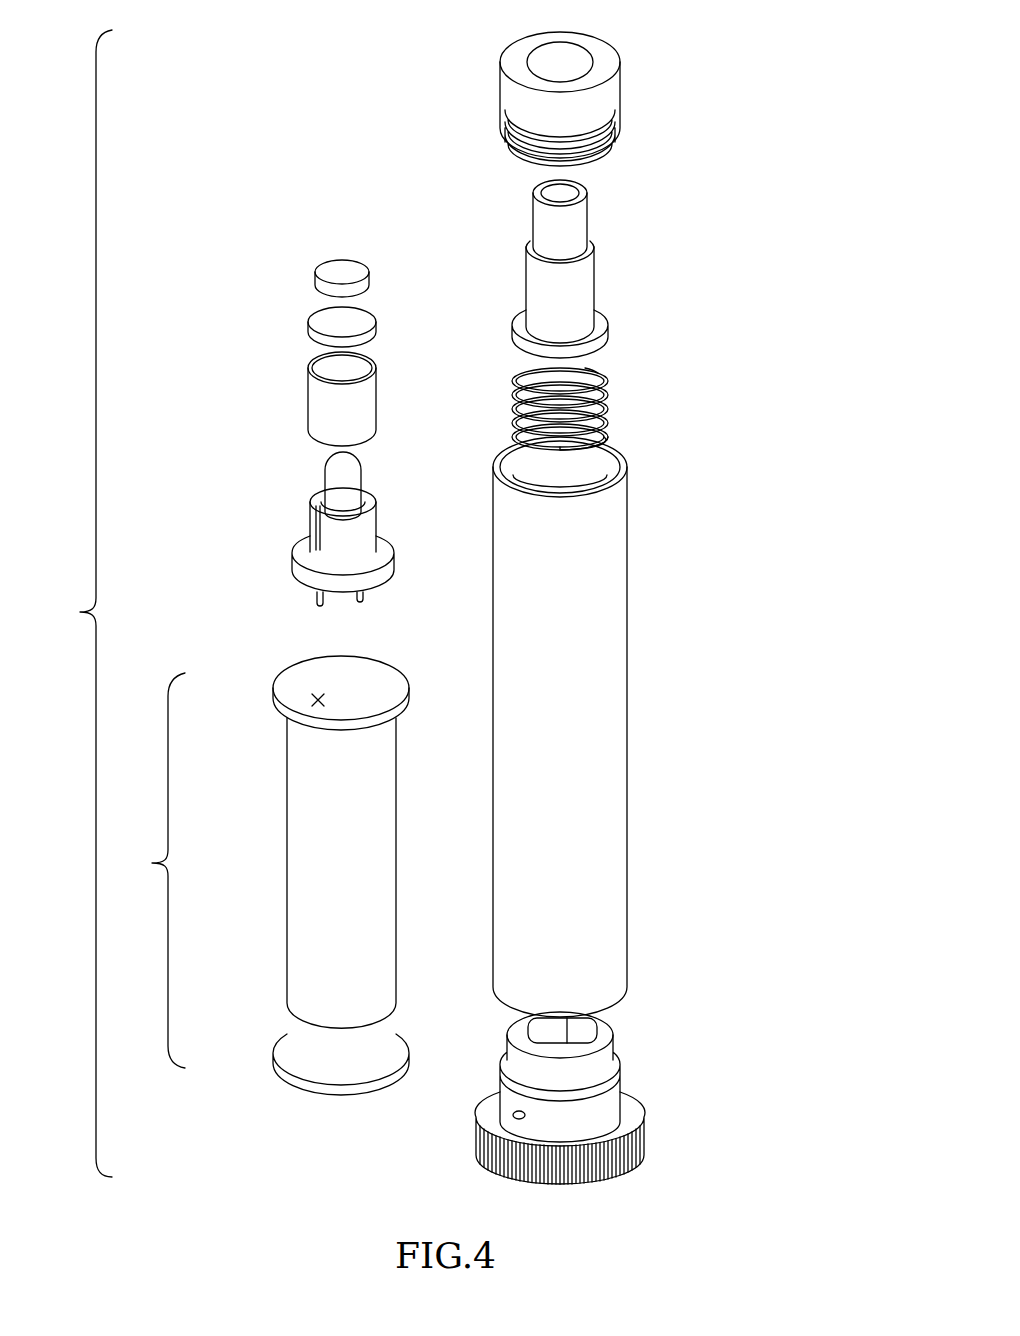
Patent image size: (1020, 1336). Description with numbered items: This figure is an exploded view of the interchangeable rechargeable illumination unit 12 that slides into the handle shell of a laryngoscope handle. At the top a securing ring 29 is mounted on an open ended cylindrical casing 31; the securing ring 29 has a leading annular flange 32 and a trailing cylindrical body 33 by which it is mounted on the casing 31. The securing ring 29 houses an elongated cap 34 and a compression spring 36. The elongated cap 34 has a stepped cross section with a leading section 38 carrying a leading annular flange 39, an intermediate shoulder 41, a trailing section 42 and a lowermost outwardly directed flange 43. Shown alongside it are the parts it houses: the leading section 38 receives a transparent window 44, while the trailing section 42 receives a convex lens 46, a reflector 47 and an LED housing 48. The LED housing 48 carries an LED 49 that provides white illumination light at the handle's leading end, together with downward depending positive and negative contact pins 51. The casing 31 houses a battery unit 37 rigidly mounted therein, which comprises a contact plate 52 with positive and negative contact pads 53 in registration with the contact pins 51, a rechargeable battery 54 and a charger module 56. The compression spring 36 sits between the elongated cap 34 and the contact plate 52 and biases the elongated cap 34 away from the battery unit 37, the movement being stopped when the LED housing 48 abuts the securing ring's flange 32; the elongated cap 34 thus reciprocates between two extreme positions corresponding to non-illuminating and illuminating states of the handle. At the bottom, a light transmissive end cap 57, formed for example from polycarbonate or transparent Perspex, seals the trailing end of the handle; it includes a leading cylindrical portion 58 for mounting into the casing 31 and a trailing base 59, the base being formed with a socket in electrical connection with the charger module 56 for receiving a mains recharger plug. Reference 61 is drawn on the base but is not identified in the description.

The illumination unit 12 is at (80, 603).
The securing ring 29 is at (654, 31).
The cylindrical casing 31 is at (600, 720).
The leading annular flange 32 is at (528, 48).
The trailing cylindrical body 33 is at (603, 102).
The elongated cap 34 is at (735, 219).
The compression spring 36 is at (606, 397).
The battery unit 37 is at (149, 870).
The leading section 38 is at (578, 215).
The leading annular flange 39 is at (540, 186).
The intermediate shoulder 41 is at (592, 246).
The trailing section 42 is at (586, 288).
The lowermost outwardly directed flange 43 is at (600, 343).
The transparent window 44 is at (322, 262).
The convex lens 46 is at (308, 318).
The reflector 47 is at (328, 398).
The LED housing 48 is at (296, 567).
The LED 49 is at (335, 465).
The contact pins 51 is at (362, 599).
The contact plate 52 is at (280, 708).
The contact pads 53 is at (320, 700).
The rechargeable battery 54 is at (315, 835).
The charger module 56 is at (298, 1042).
The light transmissive end cap 57 is at (690, 1070).
The leading cylindrical portion 58 is at (616, 1041).
The trailing base 59 is at (645, 1130).
The base hole 61 is at (515, 1118).